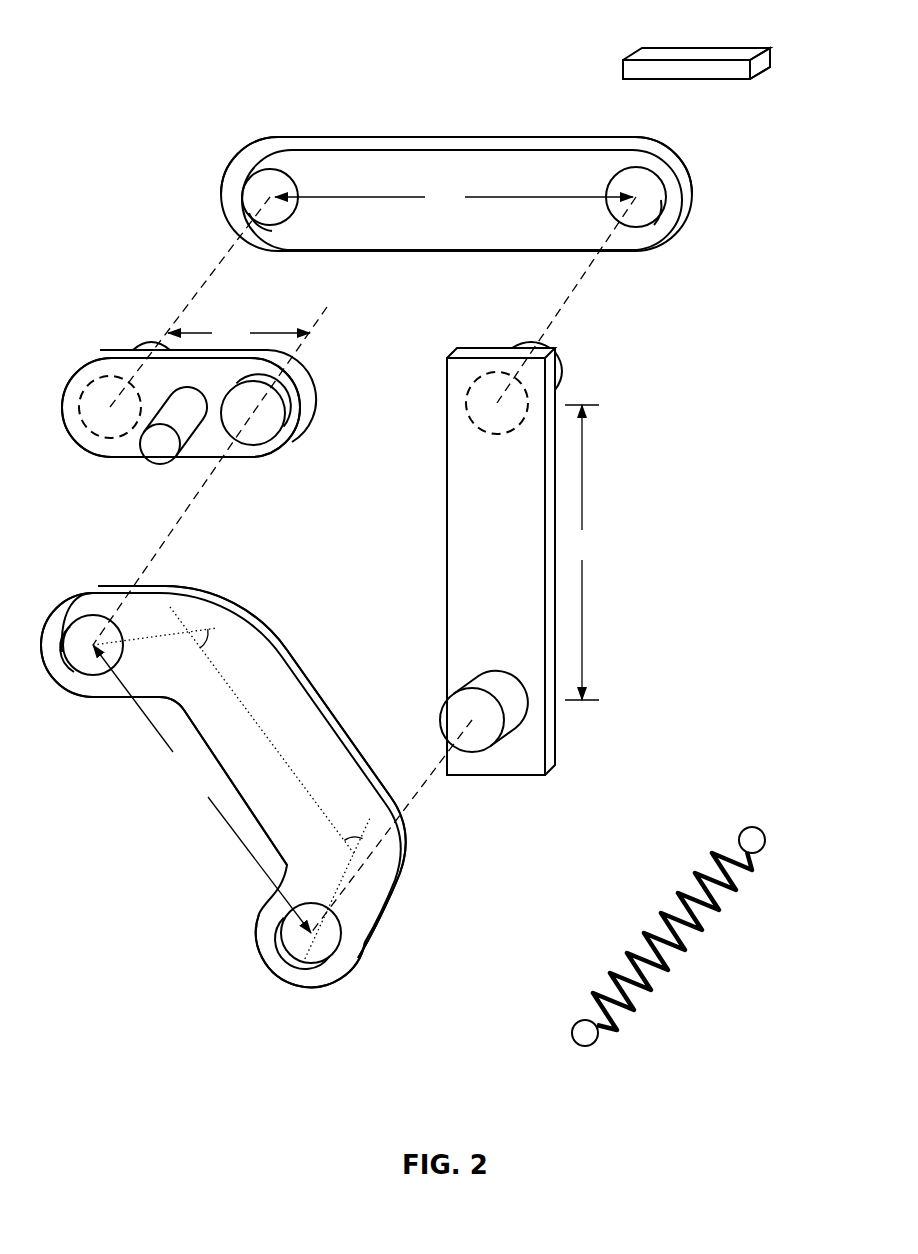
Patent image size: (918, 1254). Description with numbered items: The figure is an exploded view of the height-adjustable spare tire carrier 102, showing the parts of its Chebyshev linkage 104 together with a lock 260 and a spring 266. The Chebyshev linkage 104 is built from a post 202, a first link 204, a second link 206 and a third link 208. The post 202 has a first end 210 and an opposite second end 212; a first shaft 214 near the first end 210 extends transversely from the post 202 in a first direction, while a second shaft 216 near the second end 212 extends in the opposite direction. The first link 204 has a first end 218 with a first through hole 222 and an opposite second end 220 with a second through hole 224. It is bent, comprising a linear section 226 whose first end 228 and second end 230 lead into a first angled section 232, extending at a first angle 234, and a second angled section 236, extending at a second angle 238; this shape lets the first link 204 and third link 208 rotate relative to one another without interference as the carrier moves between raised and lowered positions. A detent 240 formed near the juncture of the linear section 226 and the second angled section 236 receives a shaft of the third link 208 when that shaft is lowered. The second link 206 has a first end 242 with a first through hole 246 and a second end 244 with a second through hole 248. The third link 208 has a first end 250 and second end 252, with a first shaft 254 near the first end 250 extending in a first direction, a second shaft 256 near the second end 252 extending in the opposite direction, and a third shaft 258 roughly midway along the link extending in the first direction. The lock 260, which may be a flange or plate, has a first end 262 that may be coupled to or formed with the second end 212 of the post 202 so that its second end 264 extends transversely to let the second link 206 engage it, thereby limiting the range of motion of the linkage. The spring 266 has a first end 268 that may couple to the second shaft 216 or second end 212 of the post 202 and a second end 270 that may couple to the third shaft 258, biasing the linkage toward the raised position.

The height-adjustable spare tire carrier 102 is at (110, 42).
The Chebyshev linkage 104 is at (103, 910).
The post 202 is at (447, 543).
The first link 204 is at (310, 683).
The second link 206 is at (445, 145).
The third link 208 is at (240, 457).
The first end of the post 210 is at (503, 775).
The second end of the post 212 is at (478, 352).
The first shaft of the post 214 is at (507, 705).
The second shaft of the post 216 is at (562, 368).
The first end of the first link 218 is at (323, 992).
The second end of the first link 220 is at (47, 623).
The first through hole of the first link 222 is at (336, 962).
The second through hole of the first link 224 is at (75, 670).
The linear section 226 is at (265, 820).
The first end of the linear section 228 is at (385, 790).
The second end of the linear section 230 is at (240, 598).
The first angled section 232 is at (390, 890).
The first angle 234 is at (348, 837).
The second angled section 236 is at (108, 583).
The second angle 238 is at (207, 642).
The detent 240 is at (137, 683).
The first end of the second link 242 is at (691, 205).
The second end of the second link 244 is at (222, 205).
The first through hole of the second link 246 is at (690, 216).
The second through hole of the second link 248 is at (227, 218).
The first end of the third link 250 is at (318, 398).
The second end of the third link 252 is at (66, 395).
The first shaft of the third link 254 is at (270, 378).
The second shaft of the third link 256 is at (150, 344).
The third shaft of the third link 258 is at (158, 453).
The lock 260 is at (688, 48).
The first end of the lock 262 is at (765, 60).
The second end of the lock 264 is at (623, 70).
The spring 266 is at (703, 932).
The first end of the spring 268 is at (762, 850).
The second end of the spring 270 is at (593, 1040).